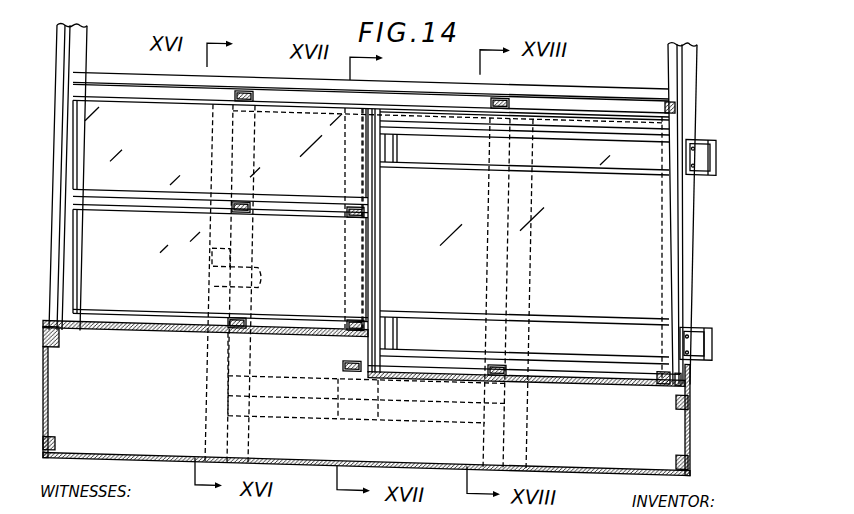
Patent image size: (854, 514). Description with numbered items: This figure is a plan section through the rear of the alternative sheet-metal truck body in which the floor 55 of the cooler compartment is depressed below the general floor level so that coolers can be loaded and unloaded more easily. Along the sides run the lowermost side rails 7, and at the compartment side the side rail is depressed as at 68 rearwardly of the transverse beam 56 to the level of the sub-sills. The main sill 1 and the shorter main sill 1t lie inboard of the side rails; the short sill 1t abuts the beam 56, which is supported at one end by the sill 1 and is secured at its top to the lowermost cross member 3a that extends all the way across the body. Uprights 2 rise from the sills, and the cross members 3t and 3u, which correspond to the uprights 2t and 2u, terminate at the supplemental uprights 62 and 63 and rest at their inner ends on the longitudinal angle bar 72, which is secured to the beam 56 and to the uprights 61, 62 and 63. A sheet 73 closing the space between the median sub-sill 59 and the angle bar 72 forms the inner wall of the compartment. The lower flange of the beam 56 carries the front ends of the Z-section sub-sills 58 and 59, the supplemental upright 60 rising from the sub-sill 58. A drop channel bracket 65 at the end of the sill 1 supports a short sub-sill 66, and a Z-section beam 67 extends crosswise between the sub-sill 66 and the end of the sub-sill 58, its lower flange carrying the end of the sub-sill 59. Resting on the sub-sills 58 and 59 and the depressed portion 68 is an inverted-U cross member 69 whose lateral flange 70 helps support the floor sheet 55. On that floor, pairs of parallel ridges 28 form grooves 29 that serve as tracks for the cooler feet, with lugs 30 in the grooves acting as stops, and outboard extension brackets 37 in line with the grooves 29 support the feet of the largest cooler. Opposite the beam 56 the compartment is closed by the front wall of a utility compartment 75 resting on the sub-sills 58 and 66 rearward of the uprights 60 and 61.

The lowermost side rail 7 is at (56, 50).
The depressed end portion of side rail 68 is at (691, 259).
The main sill 1 is at (250, 57).
The main sill at compartment side 1t is at (533, 64).
The lowermost cross member 3a is at (402, 90).
The upright 2 is at (233, 92).
The upright 2u is at (243, 198).
The upright 2t is at (228, 324).
The cross member 3u is at (156, 204).
The cross member 3t is at (148, 316).
The longitudinal angle bar 72 is at (369, 212).
The sheet 73 is at (373, 285).
The sub-sill 59 is at (380, 232).
The lug 30 is at (400, 129).
The upstanding parallel ridge 28 is at (567, 120).
The groove or track 29 is at (616, 140).
The inverted U section cross member 69 is at (622, 332).
The compartment floor 55 is at (651, 205).
The transverse beam 56 is at (630, 114).
The outboard extension bracket 37 is at (716, 137).
The lateral flange 70 is at (688, 358).
The supplemental upright 63 is at (358, 200).
The supplemental upright 62 is at (343, 337).
The supplemental upright 61 is at (343, 360).
The supplemental upright 60 is at (499, 352).
The drop channel bracket 65 is at (258, 285).
The utility compartment 75 is at (680, 420).
The sub-sill 58 is at (530, 398).
The short sub-sill 66 is at (204, 406).
The beam 67 is at (356, 414).